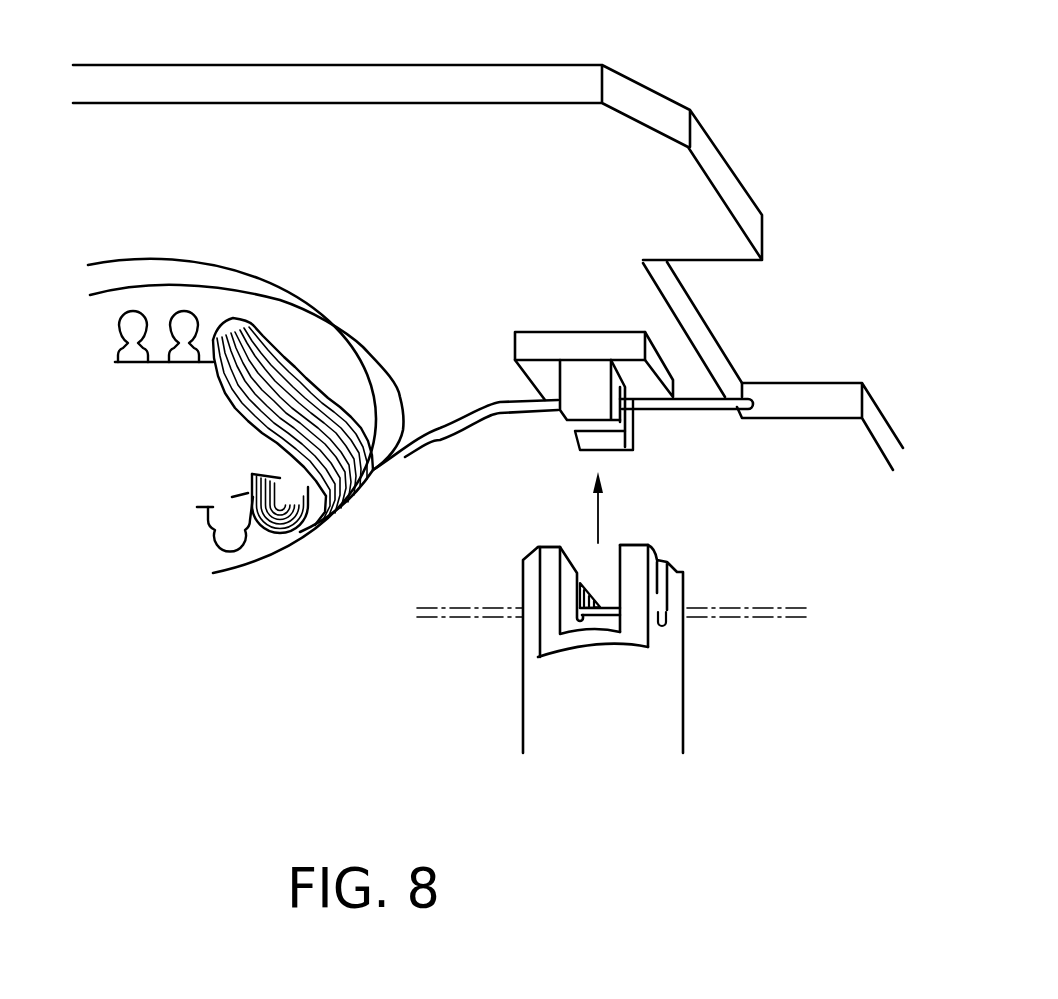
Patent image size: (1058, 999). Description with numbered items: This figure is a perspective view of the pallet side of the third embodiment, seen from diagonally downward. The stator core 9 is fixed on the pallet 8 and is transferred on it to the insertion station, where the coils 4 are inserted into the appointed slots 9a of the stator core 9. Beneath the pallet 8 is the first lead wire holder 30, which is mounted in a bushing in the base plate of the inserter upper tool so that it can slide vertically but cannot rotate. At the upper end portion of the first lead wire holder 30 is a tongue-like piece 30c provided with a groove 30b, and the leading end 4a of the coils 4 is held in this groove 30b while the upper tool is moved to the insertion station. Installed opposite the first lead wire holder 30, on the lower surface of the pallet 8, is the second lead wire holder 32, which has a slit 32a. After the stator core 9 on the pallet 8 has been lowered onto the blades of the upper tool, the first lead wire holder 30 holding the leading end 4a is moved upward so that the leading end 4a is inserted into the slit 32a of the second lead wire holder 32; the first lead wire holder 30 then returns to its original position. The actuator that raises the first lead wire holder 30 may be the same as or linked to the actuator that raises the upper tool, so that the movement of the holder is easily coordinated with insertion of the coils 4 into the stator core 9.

The coils 4 is at (253, 432).
The leading end 4a is at (758, 397).
The pallet 8 is at (727, 175).
The stator core 9 is at (327, 295).
The slots 9a is at (195, 333).
The first lead wire holder 30 is at (650, 703).
The groove 30b is at (672, 592).
The tongue-like piece 30c is at (528, 578).
The second lead wire holder 32 is at (633, 423).
The slit 32a is at (587, 435).